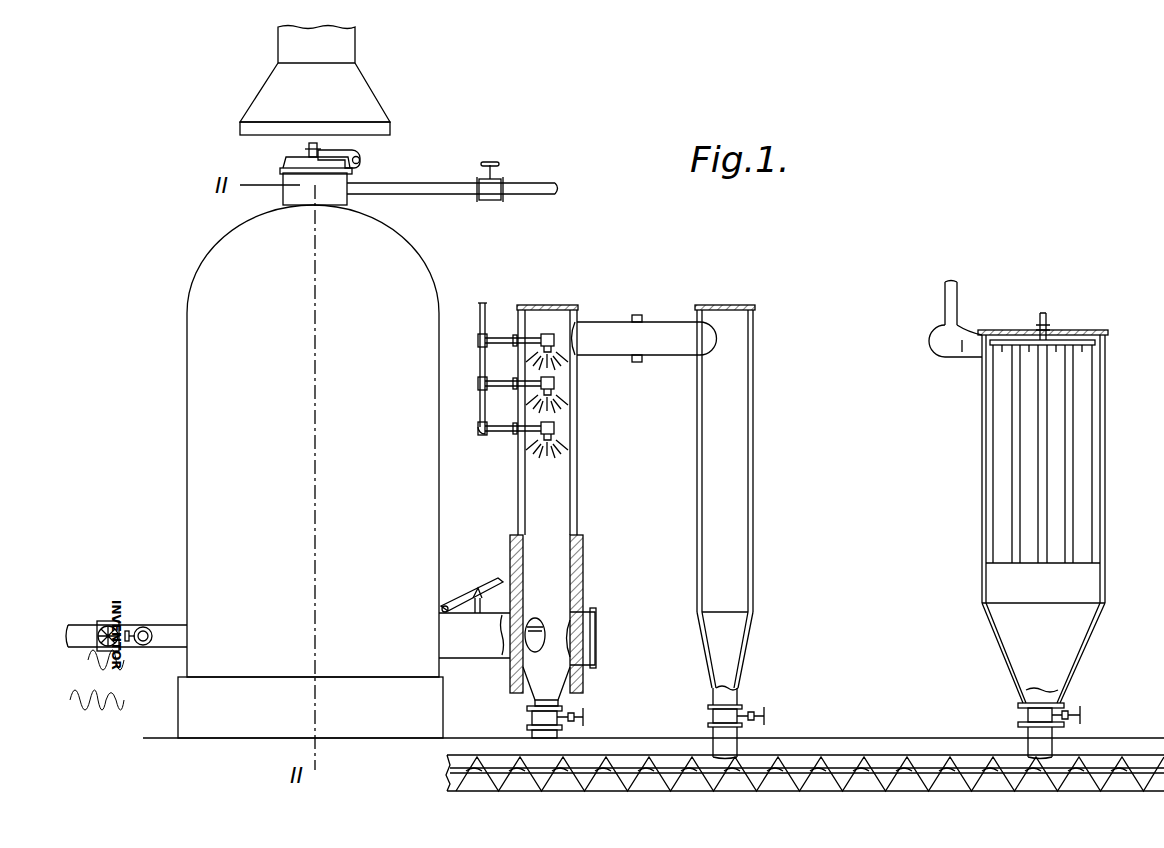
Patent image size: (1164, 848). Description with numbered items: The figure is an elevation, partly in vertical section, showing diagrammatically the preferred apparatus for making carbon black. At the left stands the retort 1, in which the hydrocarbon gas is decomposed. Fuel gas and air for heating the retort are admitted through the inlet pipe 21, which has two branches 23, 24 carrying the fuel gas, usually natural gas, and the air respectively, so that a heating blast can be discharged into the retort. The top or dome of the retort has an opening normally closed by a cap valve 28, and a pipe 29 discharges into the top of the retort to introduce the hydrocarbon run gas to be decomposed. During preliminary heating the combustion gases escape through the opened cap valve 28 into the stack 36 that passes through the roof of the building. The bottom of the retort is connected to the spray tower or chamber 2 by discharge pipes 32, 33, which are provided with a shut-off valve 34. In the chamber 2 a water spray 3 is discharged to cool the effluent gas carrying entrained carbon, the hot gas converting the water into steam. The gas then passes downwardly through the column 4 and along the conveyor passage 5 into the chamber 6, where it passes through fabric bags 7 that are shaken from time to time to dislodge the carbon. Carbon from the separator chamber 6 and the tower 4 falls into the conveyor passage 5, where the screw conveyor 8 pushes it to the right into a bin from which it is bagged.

The retort 1 is at (186, 412).
The chamber 2 is at (558, 502).
The water spray 3 is at (560, 448).
The column 4 is at (742, 437).
The conveyor passage 5 is at (832, 762).
The chamber 6 is at (1000, 583).
The fabric bags 7 is at (1028, 510).
The screw conveyor 8 is at (940, 760).
The inlet pipe 21 is at (165, 628).
The branch 23 is at (145, 646).
The branch 24 is at (83, 626).
The cap valve 28 is at (283, 168).
The pipe 29 is at (428, 190).
The discharge pipe 32 is at (478, 650).
The discharge pipe 33 is at (536, 618).
The shut-off valve 34 is at (466, 594).
The stack 36 is at (315, 81).